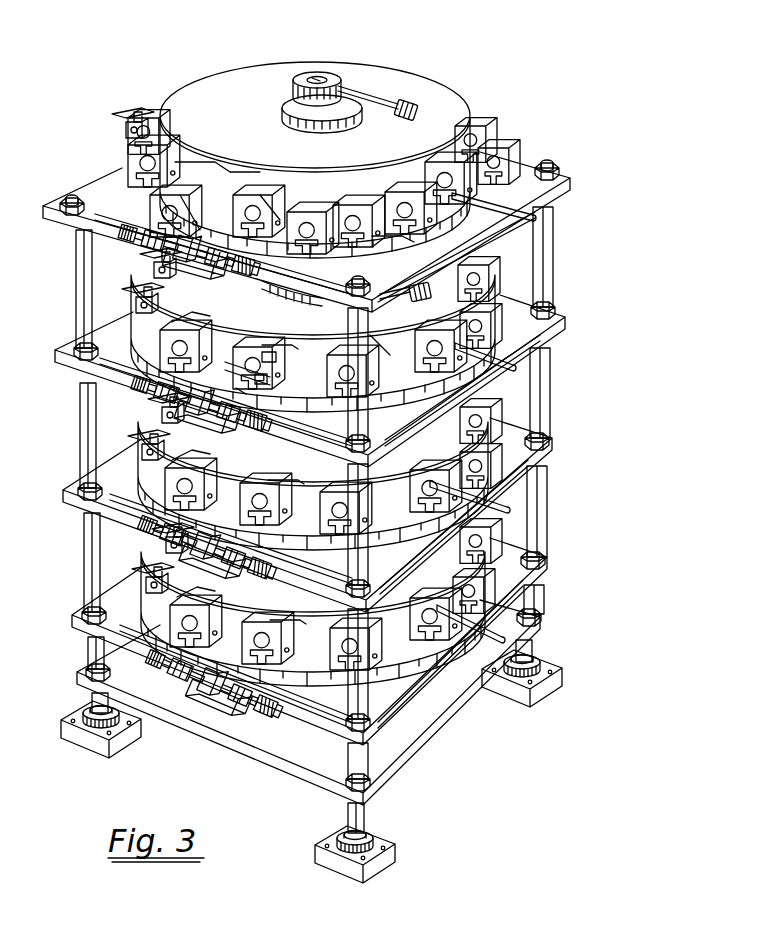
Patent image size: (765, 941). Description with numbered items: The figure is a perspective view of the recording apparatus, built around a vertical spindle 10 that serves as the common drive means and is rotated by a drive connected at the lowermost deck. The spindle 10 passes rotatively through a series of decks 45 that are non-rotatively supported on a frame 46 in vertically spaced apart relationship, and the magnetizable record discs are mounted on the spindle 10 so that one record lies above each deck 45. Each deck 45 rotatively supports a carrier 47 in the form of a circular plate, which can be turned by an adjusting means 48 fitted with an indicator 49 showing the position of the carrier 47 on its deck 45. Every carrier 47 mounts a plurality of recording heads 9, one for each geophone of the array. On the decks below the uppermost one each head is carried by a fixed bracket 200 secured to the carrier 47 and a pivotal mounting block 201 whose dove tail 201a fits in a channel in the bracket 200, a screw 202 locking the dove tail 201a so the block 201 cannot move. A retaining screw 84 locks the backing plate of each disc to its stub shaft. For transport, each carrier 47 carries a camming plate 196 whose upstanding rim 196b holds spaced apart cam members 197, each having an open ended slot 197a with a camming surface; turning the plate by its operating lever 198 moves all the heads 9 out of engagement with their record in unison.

The vertical spindle 10 is at (312, 78).
The recording heads 9 is at (225, 192).
The retaining screw 84 is at (405, 92).
The decks 45 is at (538, 160).
The frame 46 is at (556, 246).
The carrier 47 is at (500, 345).
The adjusting means 48 is at (193, 418).
The indicator 49 is at (240, 427).
The camming plate 196 is at (228, 352).
The upstanding rim 196b is at (366, 328).
The cam members 197 is at (395, 192).
The open ended slot 197a is at (272, 200).
The operating lever 198 is at (546, 216).
The fixed bracket 200 is at (272, 412).
The pivotal mounting block 201 is at (276, 359).
The dove tail 201a is at (267, 382).
The screw 202 is at (243, 393).